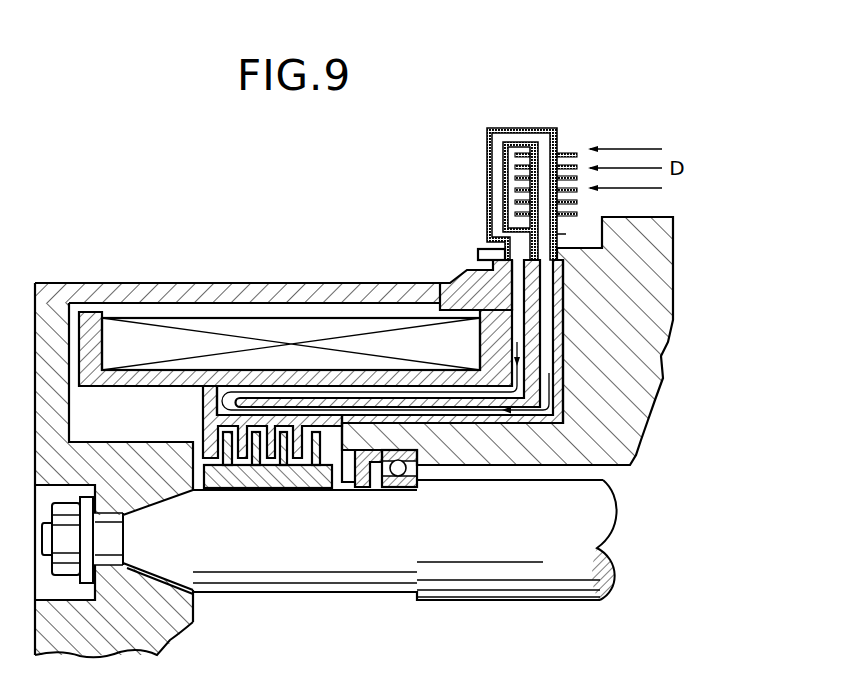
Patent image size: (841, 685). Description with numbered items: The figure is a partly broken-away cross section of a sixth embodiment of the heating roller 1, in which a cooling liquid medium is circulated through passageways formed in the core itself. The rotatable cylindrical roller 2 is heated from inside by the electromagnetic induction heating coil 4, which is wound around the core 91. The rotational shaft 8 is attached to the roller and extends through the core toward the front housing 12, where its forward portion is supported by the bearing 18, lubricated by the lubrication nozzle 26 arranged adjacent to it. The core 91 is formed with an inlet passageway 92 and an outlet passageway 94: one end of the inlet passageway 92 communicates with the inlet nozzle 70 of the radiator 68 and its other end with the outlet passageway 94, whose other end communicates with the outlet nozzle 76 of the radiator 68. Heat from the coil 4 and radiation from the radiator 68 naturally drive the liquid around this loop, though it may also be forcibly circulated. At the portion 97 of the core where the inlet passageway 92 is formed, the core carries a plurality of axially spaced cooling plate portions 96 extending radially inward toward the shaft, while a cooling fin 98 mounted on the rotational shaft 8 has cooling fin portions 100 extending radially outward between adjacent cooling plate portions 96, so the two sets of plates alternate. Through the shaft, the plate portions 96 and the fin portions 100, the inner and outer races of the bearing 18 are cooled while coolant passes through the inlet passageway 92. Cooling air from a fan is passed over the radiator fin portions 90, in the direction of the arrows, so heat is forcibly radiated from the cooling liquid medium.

The heating roller 1 is at (212, 283).
The cylindrical roller 2 is at (265, 284).
The electromagnetic induction heating coil 4 is at (308, 325).
The rotational shaft 8 is at (292, 578).
The front housing 12 is at (622, 437).
The bearing 18 is at (405, 488).
The lubrication nozzle 26 is at (377, 488).
The radiator 68 is at (523, 128).
The inlet nozzle 70 is at (566, 234).
The outlet nozzle 76 is at (492, 247).
The radiator fin portions 90 is at (568, 152).
The core 91 is at (146, 380).
The inlet passageway 92 is at (551, 285).
The outlet passageway 94 is at (512, 277).
The cooling plate portions 96 is at (236, 443).
The portion of the core 97 is at (432, 416).
The cooling fin 98 is at (244, 488).
The cooling fin portions 100 is at (300, 469).